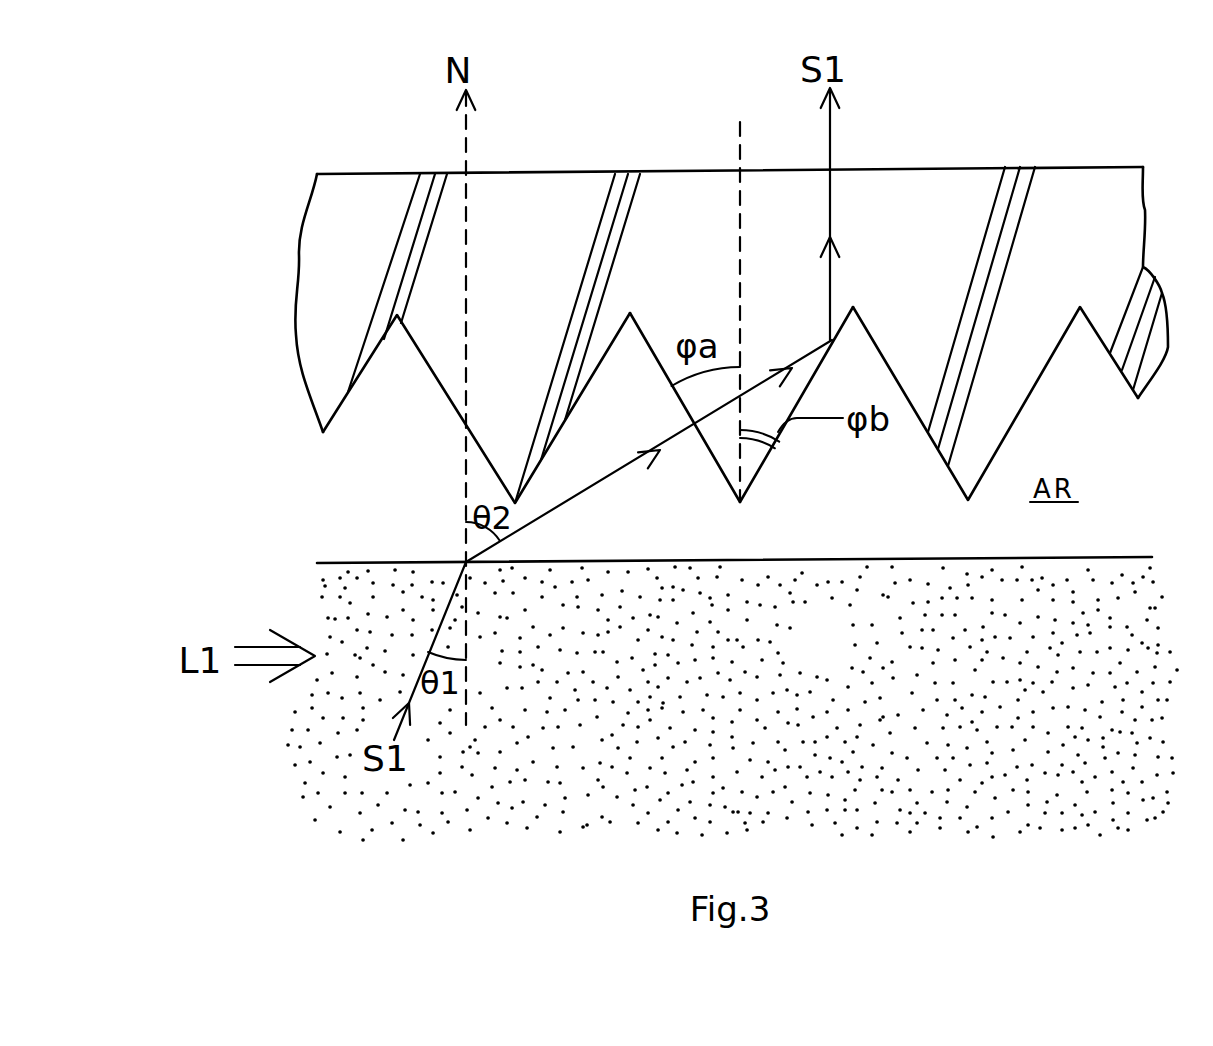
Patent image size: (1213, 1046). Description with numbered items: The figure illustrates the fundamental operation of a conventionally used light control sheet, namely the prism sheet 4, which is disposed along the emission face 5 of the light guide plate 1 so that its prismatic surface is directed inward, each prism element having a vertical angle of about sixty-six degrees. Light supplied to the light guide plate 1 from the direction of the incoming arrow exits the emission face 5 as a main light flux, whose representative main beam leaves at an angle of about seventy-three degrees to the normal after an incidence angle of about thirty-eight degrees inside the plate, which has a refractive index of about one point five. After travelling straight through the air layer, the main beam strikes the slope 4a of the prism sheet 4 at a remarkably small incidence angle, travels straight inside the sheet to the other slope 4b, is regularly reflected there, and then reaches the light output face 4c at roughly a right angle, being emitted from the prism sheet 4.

The light guide plate 1 is at (840, 651).
The prism sheet 4 is at (731, 316).
The slope 4a is at (723, 477).
The slope 4b is at (762, 470).
The light output face 4c is at (993, 166).
The emission face 5 is at (1108, 555).